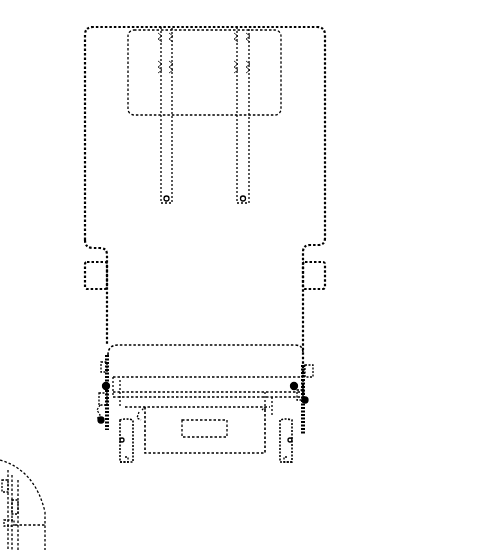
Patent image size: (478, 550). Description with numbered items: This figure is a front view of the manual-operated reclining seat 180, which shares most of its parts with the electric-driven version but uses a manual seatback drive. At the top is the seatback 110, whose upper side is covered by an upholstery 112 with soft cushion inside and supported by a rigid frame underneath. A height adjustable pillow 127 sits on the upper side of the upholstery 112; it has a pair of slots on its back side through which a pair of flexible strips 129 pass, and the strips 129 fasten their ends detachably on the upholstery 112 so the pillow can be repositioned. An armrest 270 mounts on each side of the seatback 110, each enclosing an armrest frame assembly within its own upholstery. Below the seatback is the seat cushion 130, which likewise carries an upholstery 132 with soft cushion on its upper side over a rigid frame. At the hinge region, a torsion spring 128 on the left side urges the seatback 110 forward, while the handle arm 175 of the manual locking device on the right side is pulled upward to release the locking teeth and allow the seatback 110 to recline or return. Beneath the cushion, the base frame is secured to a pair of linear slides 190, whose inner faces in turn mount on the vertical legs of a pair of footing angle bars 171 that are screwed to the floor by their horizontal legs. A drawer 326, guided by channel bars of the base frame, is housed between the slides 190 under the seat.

The manual-operated reclining seat 180 is at (352, 36).
The seatback 110 is at (333, 90).
The upholstery 112 is at (326, 148).
The height adjustable pillow 127 is at (128, 72).
The flexible strips 129 is at (252, 150).
The armrest 270 is at (82, 273).
The seat cushion 130 is at (255, 338).
The upholstery 132 is at (300, 345).
The handle arm 175 is at (96, 385).
The torsion spring 128 is at (312, 383).
The footing angle bars 171 is at (137, 470).
The drawer 326 is at (198, 441).
The linear slides 190 is at (124, 450).